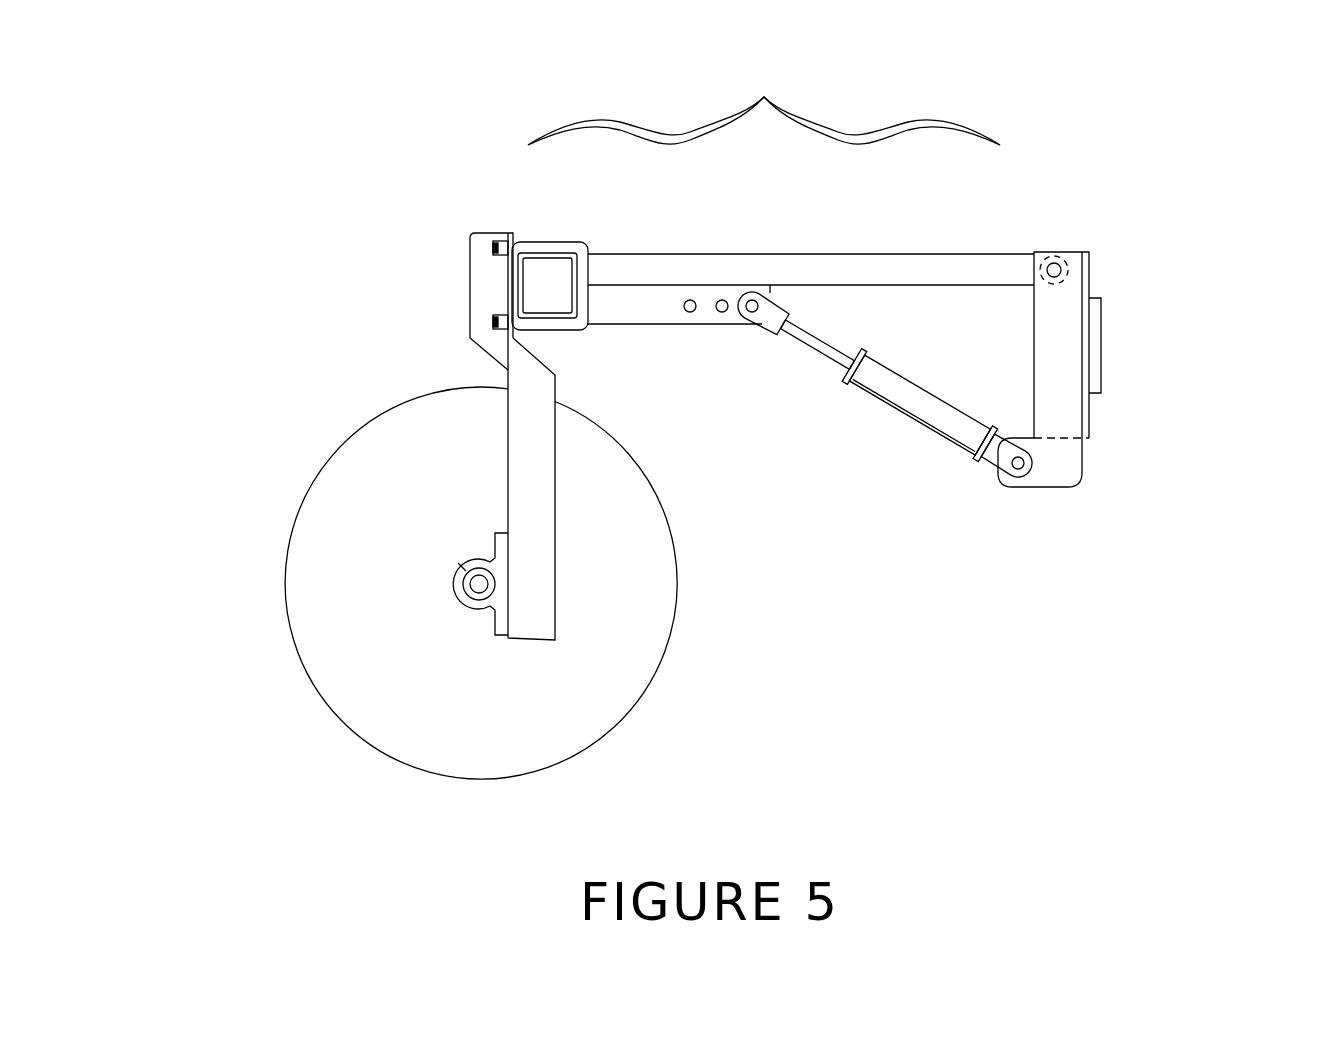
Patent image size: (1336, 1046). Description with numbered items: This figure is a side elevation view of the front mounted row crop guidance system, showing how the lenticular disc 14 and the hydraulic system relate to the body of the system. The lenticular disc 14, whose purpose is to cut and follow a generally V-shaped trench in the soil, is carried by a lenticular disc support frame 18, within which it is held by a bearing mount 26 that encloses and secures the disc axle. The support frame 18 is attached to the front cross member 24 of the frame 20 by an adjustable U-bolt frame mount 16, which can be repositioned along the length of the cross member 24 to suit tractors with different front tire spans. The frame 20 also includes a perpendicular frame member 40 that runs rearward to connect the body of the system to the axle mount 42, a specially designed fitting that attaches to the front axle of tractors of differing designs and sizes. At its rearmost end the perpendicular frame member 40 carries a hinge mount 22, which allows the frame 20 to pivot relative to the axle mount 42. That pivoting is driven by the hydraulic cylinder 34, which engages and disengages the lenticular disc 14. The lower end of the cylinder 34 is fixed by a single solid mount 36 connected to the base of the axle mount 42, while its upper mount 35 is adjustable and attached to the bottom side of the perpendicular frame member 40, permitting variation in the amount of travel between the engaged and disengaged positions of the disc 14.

The lenticular disc 14 is at (420, 583).
The adjustable U-bolt frame mount 16 is at (414, 214).
The lenticular disc support frame 18 is at (360, 301).
The frame 20 is at (764, 91).
The hinge mount 22 is at (1176, 313).
The front cross member 24 is at (602, 255).
The bearing mount 26 is at (356, 509).
The hydraulic cylinder 34 is at (911, 464).
The upper mount 35 is at (748, 359).
The solid mount 36 is at (1082, 533).
The perpendicular frame member 40 is at (874, 217).
The axle mount 42 is at (1190, 365).